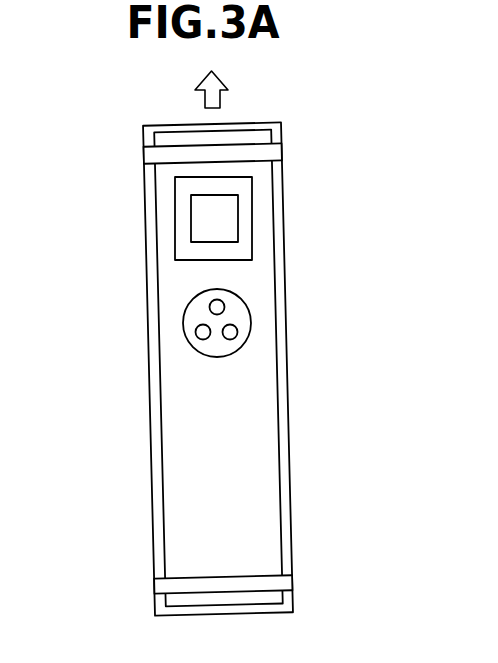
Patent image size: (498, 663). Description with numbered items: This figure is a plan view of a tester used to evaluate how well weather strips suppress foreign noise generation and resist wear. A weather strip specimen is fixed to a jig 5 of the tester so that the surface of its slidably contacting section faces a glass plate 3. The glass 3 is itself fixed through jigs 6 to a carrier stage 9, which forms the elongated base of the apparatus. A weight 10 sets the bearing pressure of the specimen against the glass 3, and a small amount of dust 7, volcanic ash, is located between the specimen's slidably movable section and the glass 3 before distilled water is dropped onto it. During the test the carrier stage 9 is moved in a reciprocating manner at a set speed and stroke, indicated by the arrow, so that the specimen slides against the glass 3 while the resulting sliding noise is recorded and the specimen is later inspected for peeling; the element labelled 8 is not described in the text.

The glass plate 3 is at (242, 407).
The jig 5 is at (195, 253).
The jigs 6 is at (193, 155).
The dust 7 is at (237, 332).
The button pad 8 is at (243, 300).
The carrier stage 9 is at (285, 550).
The weight 10 is at (220, 213).